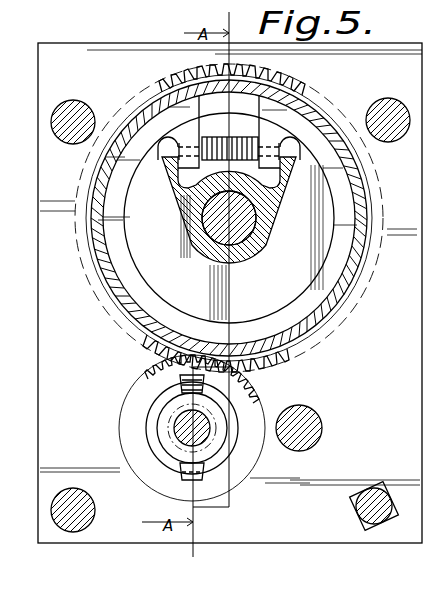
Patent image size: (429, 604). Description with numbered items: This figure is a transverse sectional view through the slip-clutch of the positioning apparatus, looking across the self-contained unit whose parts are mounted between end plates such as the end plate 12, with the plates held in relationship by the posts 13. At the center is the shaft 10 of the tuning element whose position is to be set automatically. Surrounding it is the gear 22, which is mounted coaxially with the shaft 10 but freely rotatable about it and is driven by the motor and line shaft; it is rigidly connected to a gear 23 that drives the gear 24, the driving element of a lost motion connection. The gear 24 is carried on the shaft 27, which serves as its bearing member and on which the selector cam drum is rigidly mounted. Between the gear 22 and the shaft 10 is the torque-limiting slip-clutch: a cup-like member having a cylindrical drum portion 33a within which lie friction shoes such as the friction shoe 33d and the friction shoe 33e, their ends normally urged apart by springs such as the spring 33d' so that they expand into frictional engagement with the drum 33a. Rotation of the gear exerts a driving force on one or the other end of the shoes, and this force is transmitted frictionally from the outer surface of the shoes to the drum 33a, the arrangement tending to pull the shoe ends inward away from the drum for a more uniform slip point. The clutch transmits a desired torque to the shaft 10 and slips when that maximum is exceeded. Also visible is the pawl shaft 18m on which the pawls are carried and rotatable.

The end plate 12 is at (70, 48).
The posts 13 is at (53, 124).
The gear 22 is at (182, 70).
The gear 23 is at (170, 352).
The gear 24 is at (146, 368).
The shaft 27 is at (186, 428).
The shaft 10 is at (226, 250).
The cylindrical drum portion 33a is at (348, 283).
The friction shoe unit 33d is at (252, 242).
The spring 33d' is at (229, 131).
The friction shoe unit 33e is at (276, 228).
The pawl shaft 18m is at (313, 413).